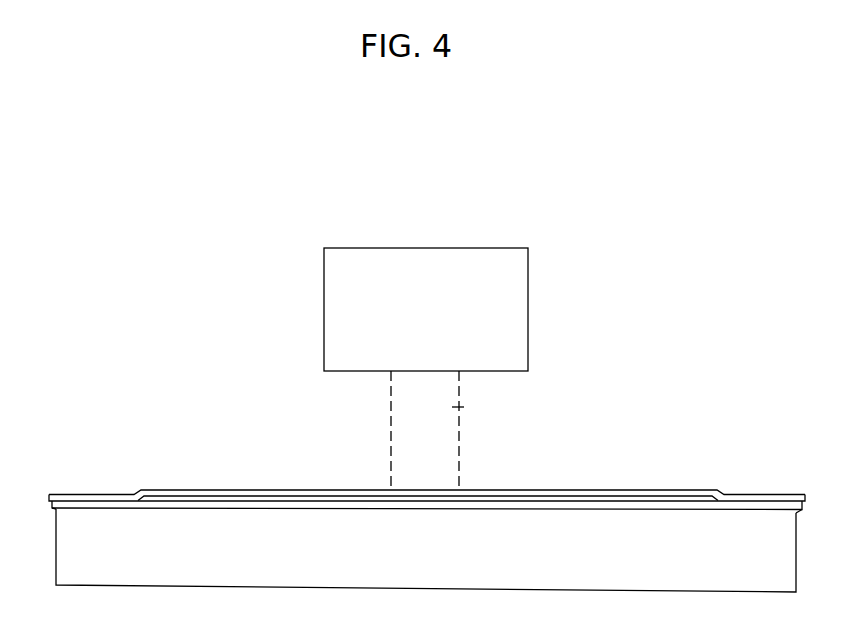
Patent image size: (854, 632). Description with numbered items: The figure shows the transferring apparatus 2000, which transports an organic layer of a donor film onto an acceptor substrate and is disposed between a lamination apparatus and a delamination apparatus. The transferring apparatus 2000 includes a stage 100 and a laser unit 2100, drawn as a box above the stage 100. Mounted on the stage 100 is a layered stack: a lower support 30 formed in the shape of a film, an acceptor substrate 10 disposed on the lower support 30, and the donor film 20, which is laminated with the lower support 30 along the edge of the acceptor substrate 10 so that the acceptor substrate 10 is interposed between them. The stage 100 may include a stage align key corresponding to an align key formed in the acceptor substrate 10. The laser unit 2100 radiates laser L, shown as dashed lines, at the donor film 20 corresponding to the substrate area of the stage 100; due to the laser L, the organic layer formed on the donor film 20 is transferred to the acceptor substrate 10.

The transferring apparatus 2000 is at (457, 191).
The laser unit 2100 is at (528, 308).
The laser L is at (468, 404).
The stage 100 is at (243, 530).
The acceptor substrate 10 is at (321, 502).
The donor film 20 is at (482, 498).
The lower support 30 is at (577, 510).